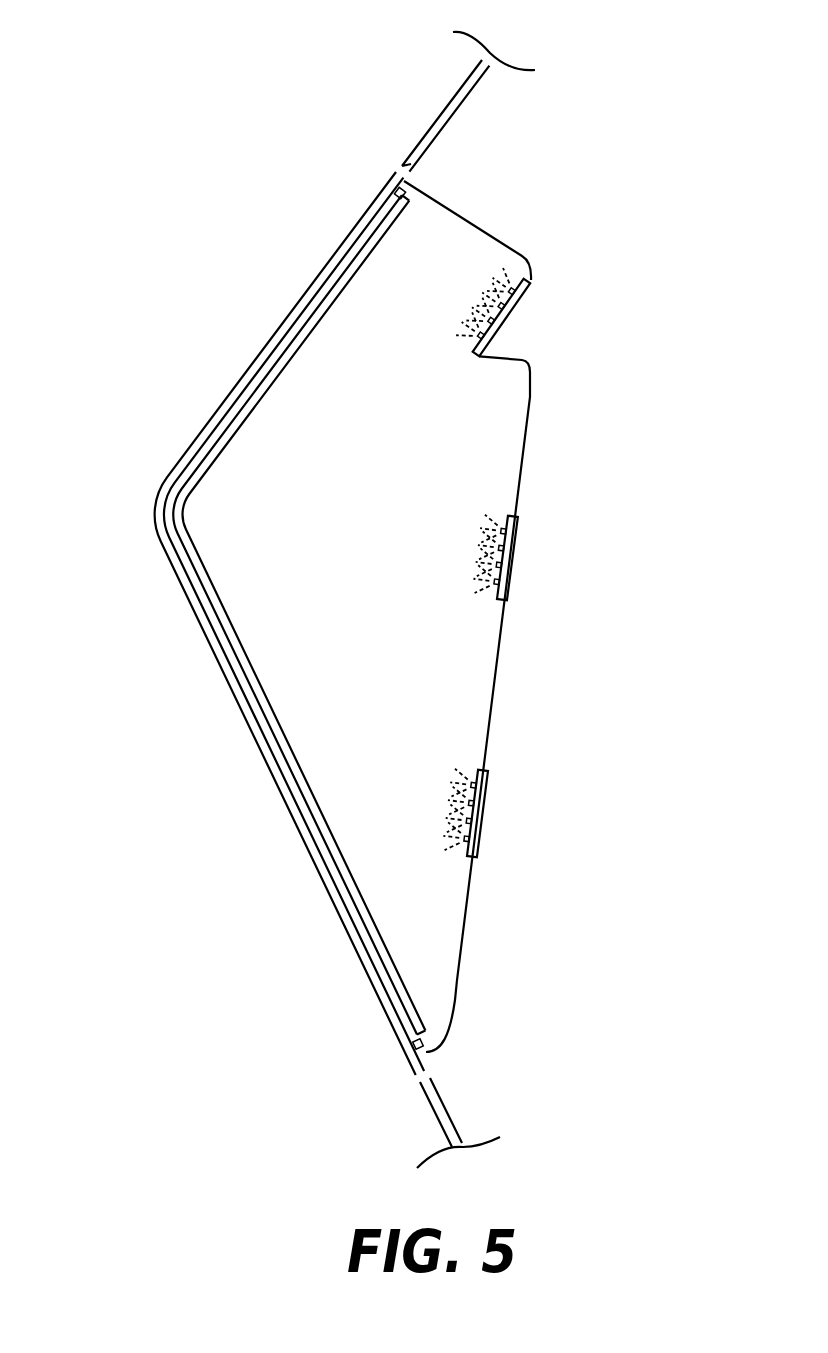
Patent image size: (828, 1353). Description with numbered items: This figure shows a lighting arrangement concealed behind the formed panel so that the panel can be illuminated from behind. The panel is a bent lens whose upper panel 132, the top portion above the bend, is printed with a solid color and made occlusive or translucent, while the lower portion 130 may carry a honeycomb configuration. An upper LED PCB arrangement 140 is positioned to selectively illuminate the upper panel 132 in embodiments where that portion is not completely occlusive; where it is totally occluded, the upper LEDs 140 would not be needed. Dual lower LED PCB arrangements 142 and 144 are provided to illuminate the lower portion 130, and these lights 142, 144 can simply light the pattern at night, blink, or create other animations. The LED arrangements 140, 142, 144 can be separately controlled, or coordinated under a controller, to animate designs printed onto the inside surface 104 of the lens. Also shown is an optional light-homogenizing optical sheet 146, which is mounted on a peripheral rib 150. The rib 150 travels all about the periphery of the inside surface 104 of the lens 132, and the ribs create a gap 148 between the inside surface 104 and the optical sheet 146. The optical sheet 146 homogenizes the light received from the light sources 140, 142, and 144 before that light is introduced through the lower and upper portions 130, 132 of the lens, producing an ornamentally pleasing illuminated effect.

The inside surface 104 is at (240, 682).
The lower portion 130 is at (280, 623).
The upper panel 132 is at (338, 252).
The upper LED PCB arrangement 140 is at (512, 312).
The lower LED PCB arrangement 142 is at (510, 556).
The lower LED PCB arrangement 144 is at (478, 818).
The light-homogenizing optical sheet 146 is at (376, 264).
The gap 148 is at (277, 368).
The peripheral rib 150 is at (405, 183).